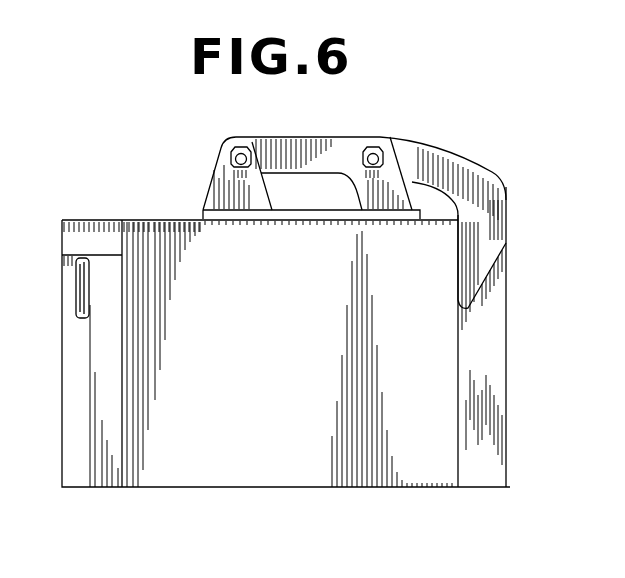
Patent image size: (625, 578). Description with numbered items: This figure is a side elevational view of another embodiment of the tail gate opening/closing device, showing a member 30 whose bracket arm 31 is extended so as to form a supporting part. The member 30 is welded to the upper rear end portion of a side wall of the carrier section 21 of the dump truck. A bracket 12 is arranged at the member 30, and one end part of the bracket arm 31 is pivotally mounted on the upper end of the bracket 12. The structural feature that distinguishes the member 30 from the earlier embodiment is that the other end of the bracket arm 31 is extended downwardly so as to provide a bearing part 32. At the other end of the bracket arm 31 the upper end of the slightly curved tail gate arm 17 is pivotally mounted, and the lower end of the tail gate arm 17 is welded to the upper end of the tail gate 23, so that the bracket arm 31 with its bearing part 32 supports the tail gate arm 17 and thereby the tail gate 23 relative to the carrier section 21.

The member 30 is at (432, 138).
The bracket arm 31 is at (333, 140).
The bracket 12 is at (222, 184).
The bearing part 32 is at (360, 193).
The tail gate arm 17 is at (488, 237).
The tail gate 23 is at (492, 352).
The carrier section 21 is at (208, 472).